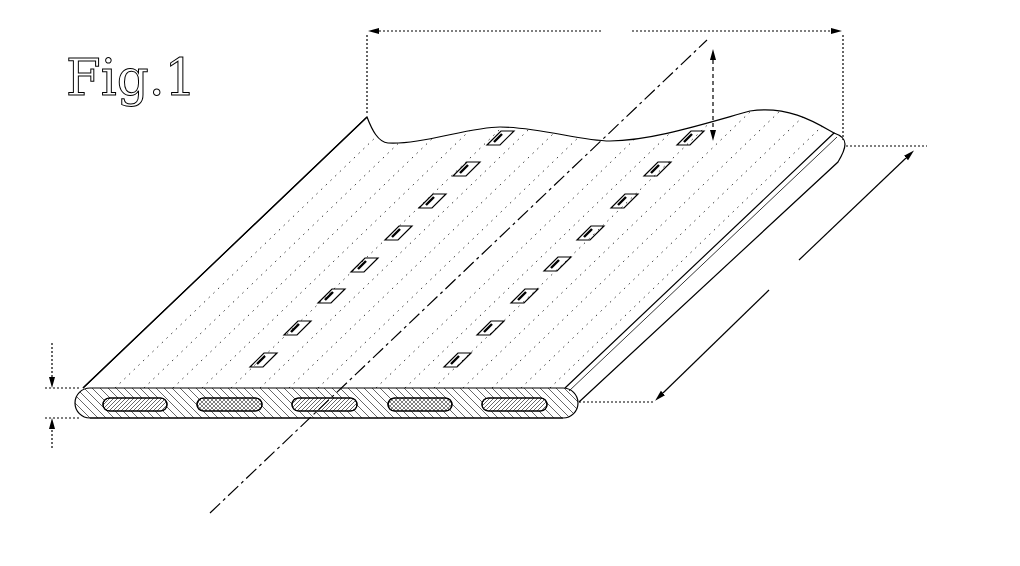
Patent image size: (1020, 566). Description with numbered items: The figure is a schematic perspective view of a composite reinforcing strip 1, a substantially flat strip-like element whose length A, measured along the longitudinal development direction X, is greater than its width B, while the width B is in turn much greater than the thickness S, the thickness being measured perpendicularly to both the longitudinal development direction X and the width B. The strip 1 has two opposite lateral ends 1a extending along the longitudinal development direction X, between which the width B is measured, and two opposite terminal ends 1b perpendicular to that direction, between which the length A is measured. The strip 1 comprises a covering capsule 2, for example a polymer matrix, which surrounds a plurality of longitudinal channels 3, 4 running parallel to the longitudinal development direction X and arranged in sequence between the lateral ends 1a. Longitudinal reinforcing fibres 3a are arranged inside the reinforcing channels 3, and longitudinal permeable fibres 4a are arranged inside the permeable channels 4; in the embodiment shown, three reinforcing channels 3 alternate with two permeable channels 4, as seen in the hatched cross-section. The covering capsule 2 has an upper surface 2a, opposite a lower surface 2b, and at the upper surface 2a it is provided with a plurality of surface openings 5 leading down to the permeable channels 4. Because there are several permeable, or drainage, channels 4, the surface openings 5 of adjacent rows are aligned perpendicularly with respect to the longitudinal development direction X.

The composite reinforcing strip 1 is at (460, 278).
The lateral ends 1a is at (688, 292).
The terminal ends 1b is at (178, 419).
The covering capsule 2 is at (326, 367).
The upper surface 2a is at (198, 280).
The lower surface 2b is at (551, 419).
The reinforcing channels 3 is at (306, 238).
The longitudinal reinforcing fibres 3a is at (135, 412).
The permeable channel 4 is at (376, 245).
The longitudinal permeable fibres 4a is at (222, 412).
The surface openings 5 is at (327, 298).
The length A is at (753, 274).
The width B is at (605, 79).
The thickness S is at (62, 395).
The longitudinal development direction X is at (268, 447).